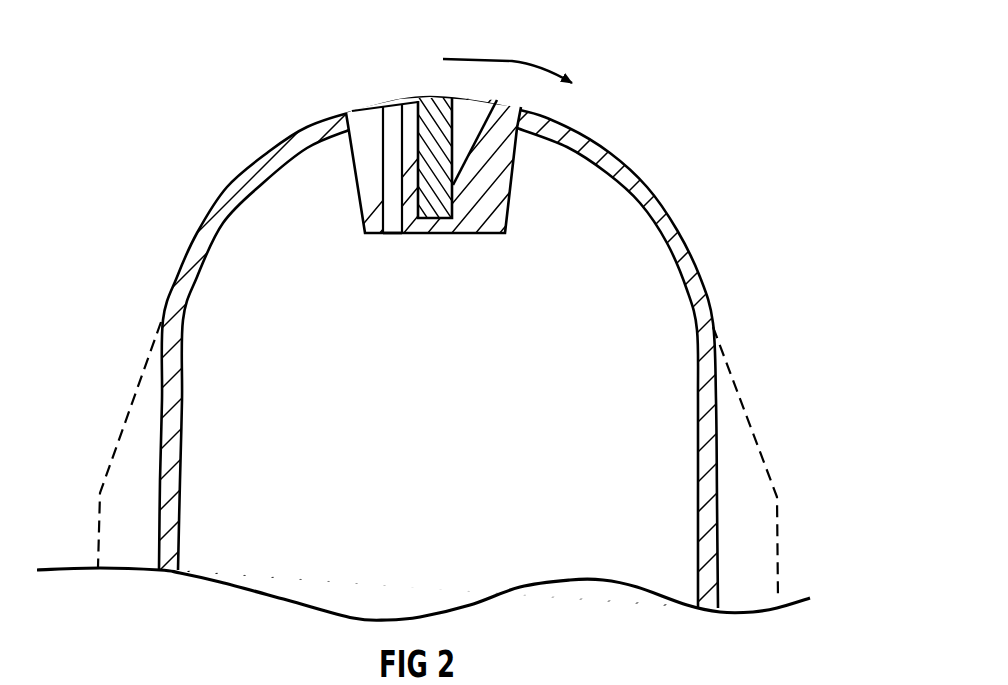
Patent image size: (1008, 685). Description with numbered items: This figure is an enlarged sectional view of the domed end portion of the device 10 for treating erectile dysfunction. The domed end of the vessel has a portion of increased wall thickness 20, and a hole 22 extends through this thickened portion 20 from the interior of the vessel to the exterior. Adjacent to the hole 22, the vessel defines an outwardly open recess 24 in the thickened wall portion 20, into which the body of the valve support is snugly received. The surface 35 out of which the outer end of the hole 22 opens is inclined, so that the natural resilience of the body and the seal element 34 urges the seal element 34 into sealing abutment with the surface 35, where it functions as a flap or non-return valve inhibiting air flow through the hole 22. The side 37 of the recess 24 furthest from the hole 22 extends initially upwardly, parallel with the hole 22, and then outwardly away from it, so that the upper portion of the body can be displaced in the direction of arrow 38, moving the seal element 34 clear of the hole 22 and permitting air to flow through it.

The device 10 is at (147, 142).
The portion of increased wall thickness 20 is at (513, 203).
The hole 22 is at (390, 233).
The outwardly open recess 24 is at (488, 100).
The seal element 34 is at (404, 110).
The surface 35 is at (365, 100).
The side of the recess 37 is at (472, 123).
The arrow 38 is at (512, 60).